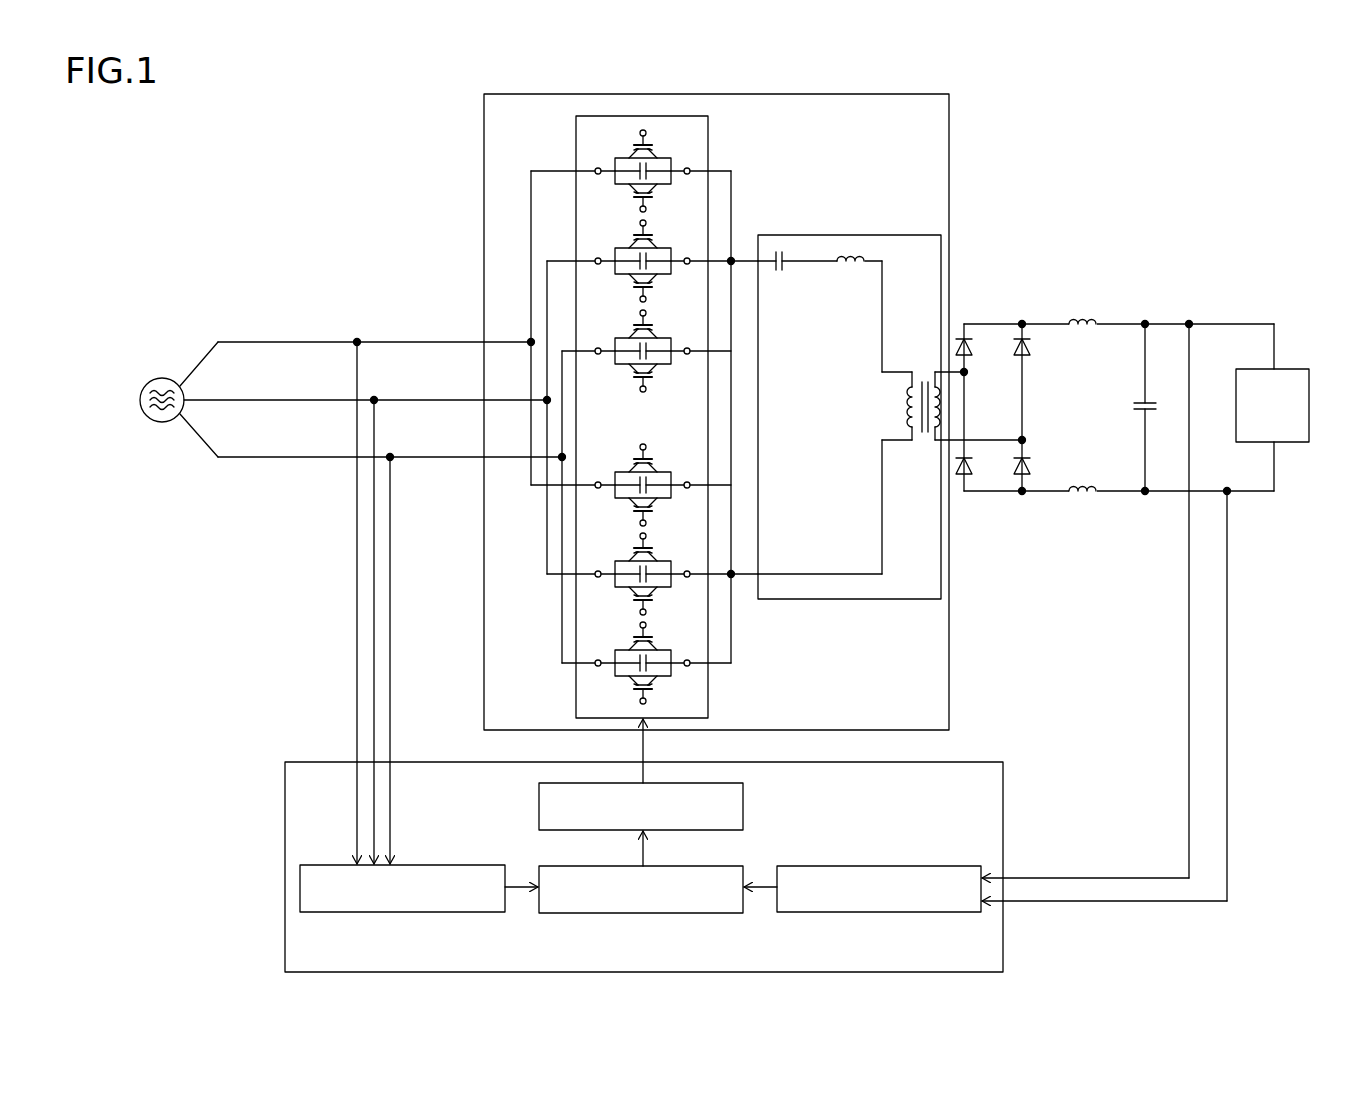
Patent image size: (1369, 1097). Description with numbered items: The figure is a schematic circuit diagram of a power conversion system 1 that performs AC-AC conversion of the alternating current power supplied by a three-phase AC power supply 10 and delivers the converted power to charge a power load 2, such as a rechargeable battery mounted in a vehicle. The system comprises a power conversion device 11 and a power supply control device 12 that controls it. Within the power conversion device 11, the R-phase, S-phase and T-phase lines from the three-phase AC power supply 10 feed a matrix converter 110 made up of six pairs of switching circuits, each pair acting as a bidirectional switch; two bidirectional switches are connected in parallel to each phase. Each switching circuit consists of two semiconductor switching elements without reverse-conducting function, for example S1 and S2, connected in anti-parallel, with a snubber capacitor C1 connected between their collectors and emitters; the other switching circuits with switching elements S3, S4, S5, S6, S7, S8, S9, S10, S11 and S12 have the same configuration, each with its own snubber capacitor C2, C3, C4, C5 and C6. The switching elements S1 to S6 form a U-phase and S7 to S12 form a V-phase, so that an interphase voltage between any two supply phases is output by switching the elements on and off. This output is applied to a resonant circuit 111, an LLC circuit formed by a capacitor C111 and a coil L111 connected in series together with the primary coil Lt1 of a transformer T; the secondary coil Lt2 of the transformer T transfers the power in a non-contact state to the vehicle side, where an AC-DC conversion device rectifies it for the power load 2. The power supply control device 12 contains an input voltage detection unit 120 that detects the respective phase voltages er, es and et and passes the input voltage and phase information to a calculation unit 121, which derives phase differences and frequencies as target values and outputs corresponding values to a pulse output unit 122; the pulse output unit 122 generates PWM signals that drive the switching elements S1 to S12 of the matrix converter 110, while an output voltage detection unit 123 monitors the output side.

The power conversion system 1 is at (1258, 212).
The power load 2 is at (1294, 368).
The three-phase AC power supply 10 is at (154, 378).
The power conversion device 11 is at (950, 152).
The power supply control device 12 is at (678, 823).
The matrix converter 110 is at (708, 134).
The resonant circuit 111 is at (849, 382).
The input voltage detection unit 120 is at (440, 913).
The calculation unit 121 is at (677, 913).
The pulse output unit 122 is at (743, 808).
The output voltage detection unit 123 is at (917, 912).
The switching element S1 is at (629, 150).
The switching element S2 is at (659, 203).
The switching element S3 is at (625, 232).
The switching element S4 is at (659, 293).
The switching element S5 is at (625, 321).
The switching element S6 is at (659, 383).
The switching element S7 is at (625, 455).
The switching element S8 is at (659, 517).
The switching element S9 is at (625, 544).
The switching element S10 is at (667, 606).
The switching element S11 is at (622, 634).
The switching element S12 is at (667, 695).
The capacitor C1 is at (625, 184).
The capacitor C2 is at (625, 275).
The capacitor C3 is at (625, 365).
The capacitor C4 is at (625, 499).
The capacitor C5 is at (625, 588).
The capacitor C6 is at (625, 677).
The capacitor C111 is at (780, 272).
The coil L111 is at (851, 268).
The transformer T is at (858, 423).
The primary coil Lt1 is at (906, 411).
The secondary coil Lt2 is at (926, 432).
The voltage of the R-phase er is at (268, 326).
The voltage of the S-phase es is at (269, 383).
The voltage of the T-phase et is at (268, 441).